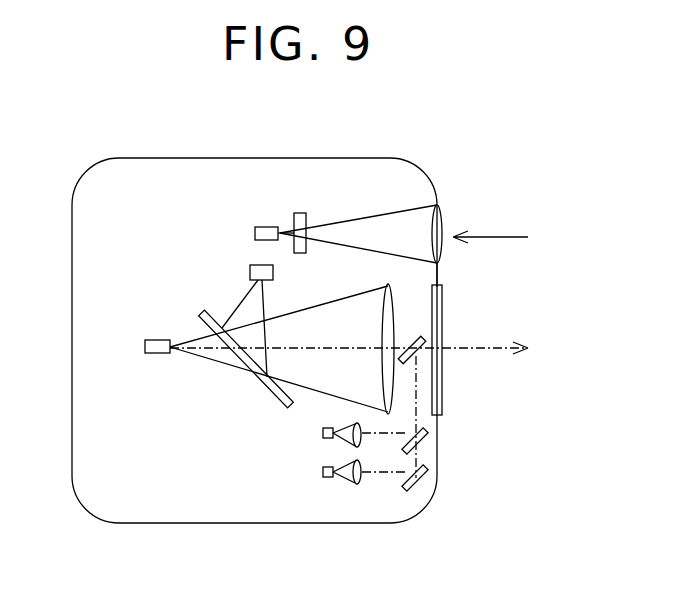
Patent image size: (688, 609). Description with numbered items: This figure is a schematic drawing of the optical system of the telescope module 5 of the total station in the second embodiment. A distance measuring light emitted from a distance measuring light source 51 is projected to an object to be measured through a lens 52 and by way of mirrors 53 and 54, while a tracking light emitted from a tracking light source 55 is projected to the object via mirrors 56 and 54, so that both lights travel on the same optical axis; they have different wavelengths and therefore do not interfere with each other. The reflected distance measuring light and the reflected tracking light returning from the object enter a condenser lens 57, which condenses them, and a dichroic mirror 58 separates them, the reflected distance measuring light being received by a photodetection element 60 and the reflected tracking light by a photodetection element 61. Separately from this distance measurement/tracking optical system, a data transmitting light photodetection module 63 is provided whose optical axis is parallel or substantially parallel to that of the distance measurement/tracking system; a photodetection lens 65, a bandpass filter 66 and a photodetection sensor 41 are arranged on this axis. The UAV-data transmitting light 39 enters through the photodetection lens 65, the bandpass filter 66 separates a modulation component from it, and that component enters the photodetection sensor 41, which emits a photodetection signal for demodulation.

The telescope module 5 is at (398, 160).
The UAV-data transmitting light 39 is at (505, 237).
The photodetection sensor 41 is at (255, 228).
The distance measuring light source 51 is at (322, 438).
The lens 52 is at (358, 423).
The mirror 53 is at (425, 437).
The mirror 54 is at (443, 323).
The tracking light source 55 is at (327, 480).
The mirror 56 is at (425, 478).
The condenser lens 57 is at (392, 287).
The dichroic mirror 58 is at (200, 315).
The photodetection element 60 is at (152, 355).
The photodetection element 61 is at (250, 267).
The data transmitting light photodetection module 63 is at (287, 205).
The photodetection lens 65 is at (440, 206).
The bandpass filter 66 is at (305, 212).